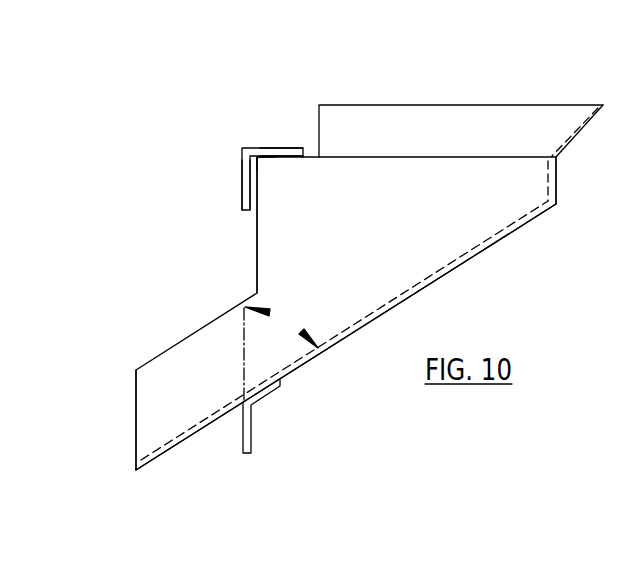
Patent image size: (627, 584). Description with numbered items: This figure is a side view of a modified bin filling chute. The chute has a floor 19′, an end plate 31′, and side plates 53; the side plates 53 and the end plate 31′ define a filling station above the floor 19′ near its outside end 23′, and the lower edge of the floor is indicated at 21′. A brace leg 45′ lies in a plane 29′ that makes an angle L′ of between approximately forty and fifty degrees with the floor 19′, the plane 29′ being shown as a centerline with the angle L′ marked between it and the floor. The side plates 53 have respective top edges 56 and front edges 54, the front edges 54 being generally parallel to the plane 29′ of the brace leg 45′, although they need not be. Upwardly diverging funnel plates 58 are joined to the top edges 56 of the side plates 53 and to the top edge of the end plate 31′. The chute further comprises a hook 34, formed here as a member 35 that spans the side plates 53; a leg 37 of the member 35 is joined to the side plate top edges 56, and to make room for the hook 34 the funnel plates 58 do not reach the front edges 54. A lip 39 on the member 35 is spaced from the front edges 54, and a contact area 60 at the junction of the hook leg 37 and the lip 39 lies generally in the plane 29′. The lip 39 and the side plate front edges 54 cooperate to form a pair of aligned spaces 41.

The floor 19′ is at (473, 262).
The lower edge 21′ is at (135, 468).
The outside end 23′ is at (556, 206).
The plane 29′ is at (243, 343).
The end plate 31′ is at (558, 185).
The hook 34 is at (236, 143).
The member 35 is at (290, 149).
The leg 37 is at (270, 155).
The lip 39 is at (242, 175).
The aligned spaces 41 is at (254, 210).
The brace leg 45′ is at (246, 432).
The side plates 53 is at (368, 253).
The front edges 54 is at (257, 265).
The top edges 56 is at (355, 156).
The funnel plates 58 is at (503, 135).
The contact area 60 is at (256, 158).
The angle L′ is at (281, 325).